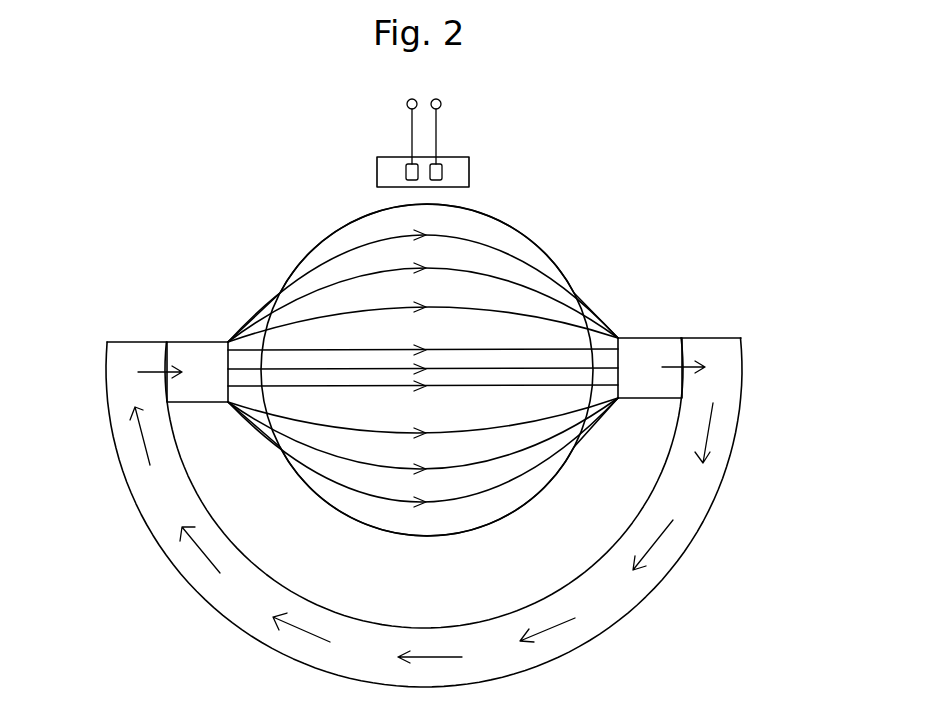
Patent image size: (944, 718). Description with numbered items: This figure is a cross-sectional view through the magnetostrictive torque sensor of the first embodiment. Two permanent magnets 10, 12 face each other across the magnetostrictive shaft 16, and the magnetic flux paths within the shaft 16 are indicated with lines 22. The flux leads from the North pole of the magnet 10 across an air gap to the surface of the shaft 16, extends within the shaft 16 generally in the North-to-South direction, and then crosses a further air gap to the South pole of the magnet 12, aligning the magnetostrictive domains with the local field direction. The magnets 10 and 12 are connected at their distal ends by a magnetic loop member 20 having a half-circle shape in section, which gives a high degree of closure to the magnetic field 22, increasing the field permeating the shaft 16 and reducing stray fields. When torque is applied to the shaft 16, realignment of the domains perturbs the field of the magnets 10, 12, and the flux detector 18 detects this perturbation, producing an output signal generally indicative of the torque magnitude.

The permanent magnet 10 is at (192, 342).
The permanent magnet 12 is at (643, 338).
The magnetostrictive shaft 16 is at (520, 237).
The flux detector 18 is at (388, 169).
The magnetic loop member 20 is at (708, 490).
The magnetic flux paths 22 is at (325, 263).